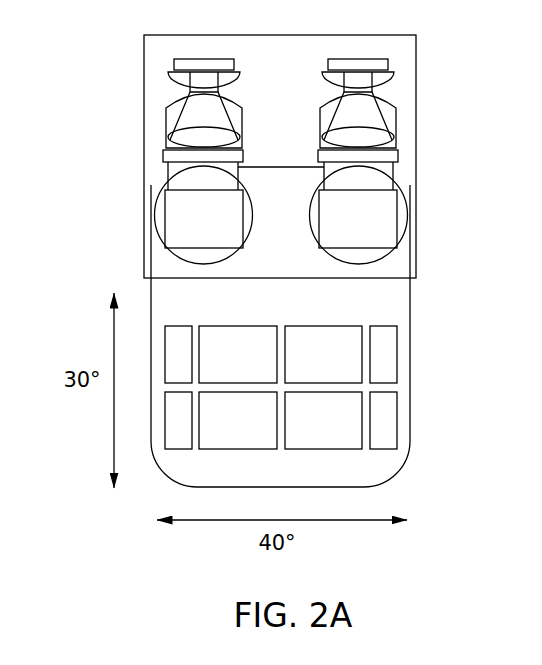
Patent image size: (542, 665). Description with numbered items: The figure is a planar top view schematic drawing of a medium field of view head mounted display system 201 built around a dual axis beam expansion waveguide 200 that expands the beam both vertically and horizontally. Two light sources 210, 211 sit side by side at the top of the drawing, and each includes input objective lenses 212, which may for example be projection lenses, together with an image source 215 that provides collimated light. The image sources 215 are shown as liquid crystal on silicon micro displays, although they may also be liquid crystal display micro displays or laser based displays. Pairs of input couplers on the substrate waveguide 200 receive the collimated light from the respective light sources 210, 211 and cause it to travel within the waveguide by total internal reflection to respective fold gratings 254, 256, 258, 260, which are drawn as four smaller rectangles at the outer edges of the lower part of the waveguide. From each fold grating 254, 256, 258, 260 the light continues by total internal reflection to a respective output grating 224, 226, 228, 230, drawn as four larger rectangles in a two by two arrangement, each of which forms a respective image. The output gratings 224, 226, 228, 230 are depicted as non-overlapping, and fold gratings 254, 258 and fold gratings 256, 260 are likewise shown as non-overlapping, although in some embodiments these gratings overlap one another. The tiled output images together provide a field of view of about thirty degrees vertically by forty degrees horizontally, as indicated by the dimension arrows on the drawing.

The dual axis beam expansion waveguide 200 is at (400, 292).
The head mounted display system 201 is at (430, 150).
The light source 210 is at (160, 62).
The light source 211 is at (400, 62).
The input objective lens 212 is at (157, 117).
The image source 215 is at (225, 238).
The output grating 224 is at (212, 326).
The output grating 226 is at (352, 326).
The output grating 228 is at (222, 450).
The output grating 230 is at (342, 450).
The fold grating 254 is at (173, 327).
The fold grating 256 is at (397, 360).
The fold grating 258 is at (173, 450).
The fold grating 260 is at (397, 423).